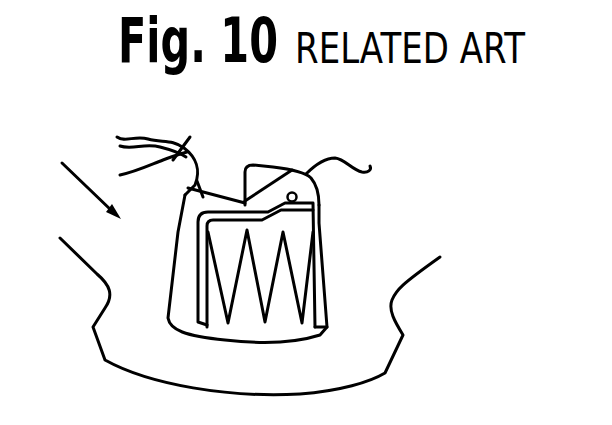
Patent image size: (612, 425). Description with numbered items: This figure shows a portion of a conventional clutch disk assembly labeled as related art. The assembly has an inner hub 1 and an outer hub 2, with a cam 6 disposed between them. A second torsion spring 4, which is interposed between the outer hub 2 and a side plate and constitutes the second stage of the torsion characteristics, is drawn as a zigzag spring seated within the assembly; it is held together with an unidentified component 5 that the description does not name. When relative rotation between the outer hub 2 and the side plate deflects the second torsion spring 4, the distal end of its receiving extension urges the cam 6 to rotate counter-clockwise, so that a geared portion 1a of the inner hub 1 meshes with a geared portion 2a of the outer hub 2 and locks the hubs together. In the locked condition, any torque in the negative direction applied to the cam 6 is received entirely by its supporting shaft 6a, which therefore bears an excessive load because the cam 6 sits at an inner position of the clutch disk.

The inner hub 1 is at (150, 166).
The geared portion 1a is at (182, 200).
The outer hub 2 is at (396, 285).
The geared portion 2a is at (340, 183).
The second torsion spring 4 is at (270, 307).
The clip channel 5 is at (232, 210).
The cam 6 is at (277, 185).
The supporting shaft 6a is at (296, 192).